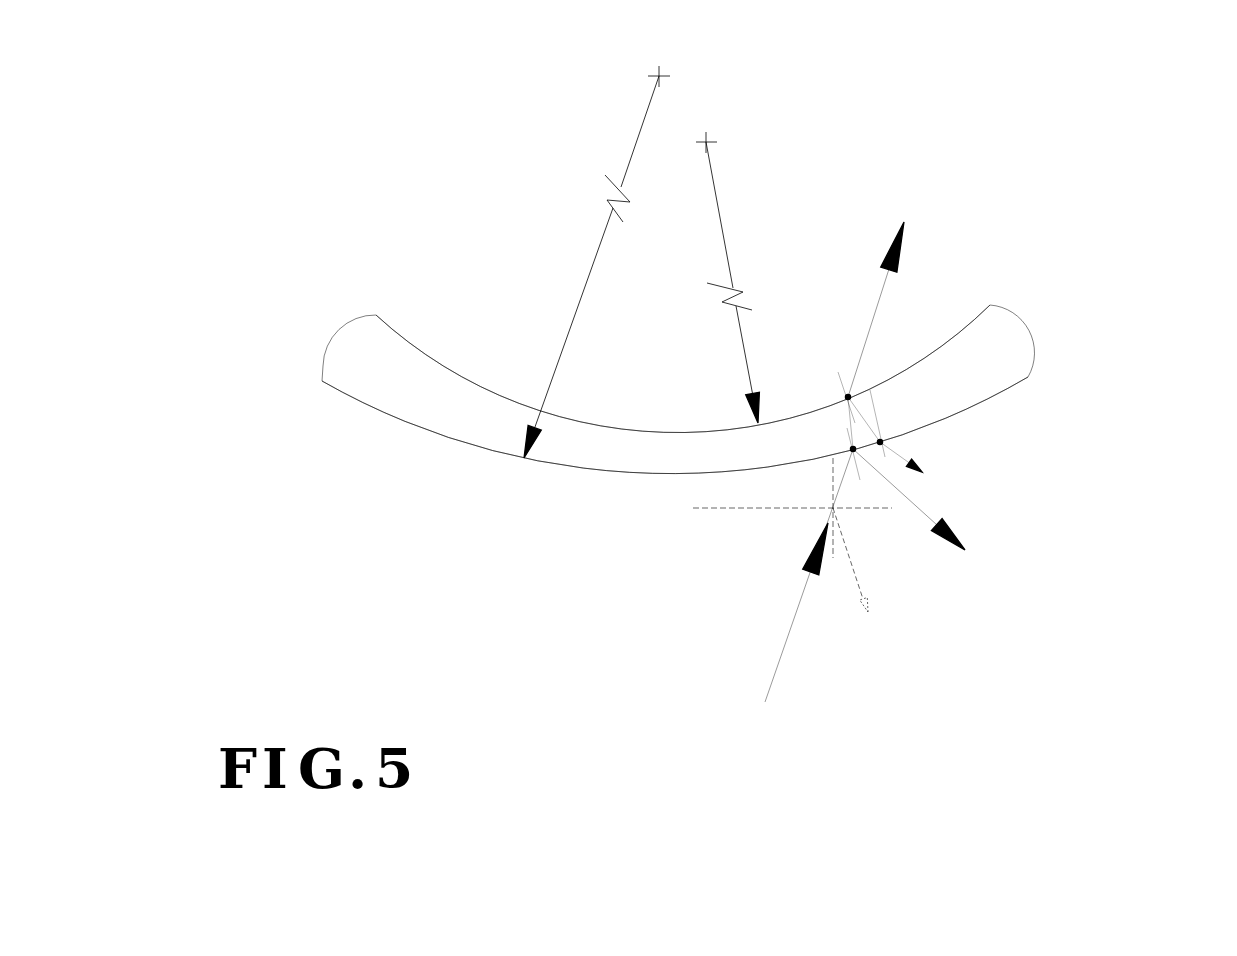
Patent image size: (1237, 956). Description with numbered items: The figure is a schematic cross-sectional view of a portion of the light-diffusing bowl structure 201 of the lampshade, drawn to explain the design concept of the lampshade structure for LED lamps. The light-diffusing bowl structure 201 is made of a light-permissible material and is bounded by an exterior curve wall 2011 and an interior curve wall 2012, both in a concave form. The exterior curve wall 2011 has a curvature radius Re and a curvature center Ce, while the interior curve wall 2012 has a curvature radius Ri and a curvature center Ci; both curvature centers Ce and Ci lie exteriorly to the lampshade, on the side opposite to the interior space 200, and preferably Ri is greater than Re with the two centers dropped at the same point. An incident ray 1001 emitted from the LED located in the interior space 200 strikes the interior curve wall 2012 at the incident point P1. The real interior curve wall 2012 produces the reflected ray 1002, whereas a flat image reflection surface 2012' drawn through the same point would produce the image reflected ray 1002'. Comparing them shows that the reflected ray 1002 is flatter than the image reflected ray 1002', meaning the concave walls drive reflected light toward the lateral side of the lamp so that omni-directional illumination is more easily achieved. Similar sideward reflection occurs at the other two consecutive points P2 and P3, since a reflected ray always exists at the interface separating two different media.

The light-diffusing bowl structure 201 is at (1140, 254).
The exterior curve wall 2011 is at (498, 393).
The interior curve wall 2012 is at (612, 492).
The image reflection surface 2012' is at (706, 574).
The interior space 200 is at (650, 615).
The incident ray 1001 is at (782, 657).
The reflected ray 1002 is at (970, 499).
The image reflected ray 1002' is at (924, 561).
The curvature center of the interior curve wall Ci is at (634, 71).
The curvature center of the exterior curve wall Ce is at (731, 134).
The curvature radius of the interior curve wall Ri is at (591, 267).
The curvature radius of the exterior curve wall Re is at (740, 282).
The incident point P1 is at (831, 464).
The consecutive point P2 is at (853, 335).
The consecutive point P3 is at (908, 431).